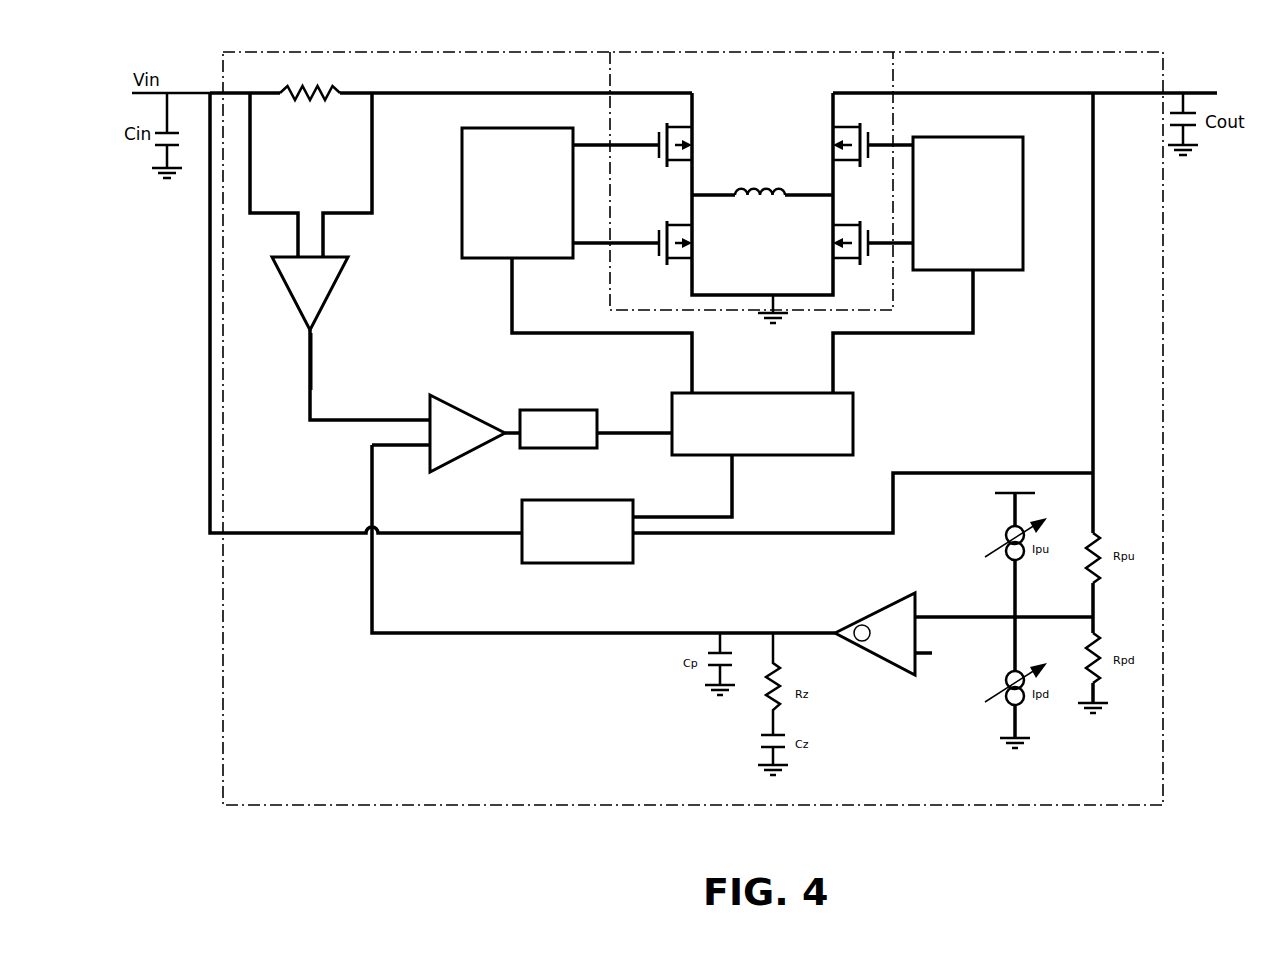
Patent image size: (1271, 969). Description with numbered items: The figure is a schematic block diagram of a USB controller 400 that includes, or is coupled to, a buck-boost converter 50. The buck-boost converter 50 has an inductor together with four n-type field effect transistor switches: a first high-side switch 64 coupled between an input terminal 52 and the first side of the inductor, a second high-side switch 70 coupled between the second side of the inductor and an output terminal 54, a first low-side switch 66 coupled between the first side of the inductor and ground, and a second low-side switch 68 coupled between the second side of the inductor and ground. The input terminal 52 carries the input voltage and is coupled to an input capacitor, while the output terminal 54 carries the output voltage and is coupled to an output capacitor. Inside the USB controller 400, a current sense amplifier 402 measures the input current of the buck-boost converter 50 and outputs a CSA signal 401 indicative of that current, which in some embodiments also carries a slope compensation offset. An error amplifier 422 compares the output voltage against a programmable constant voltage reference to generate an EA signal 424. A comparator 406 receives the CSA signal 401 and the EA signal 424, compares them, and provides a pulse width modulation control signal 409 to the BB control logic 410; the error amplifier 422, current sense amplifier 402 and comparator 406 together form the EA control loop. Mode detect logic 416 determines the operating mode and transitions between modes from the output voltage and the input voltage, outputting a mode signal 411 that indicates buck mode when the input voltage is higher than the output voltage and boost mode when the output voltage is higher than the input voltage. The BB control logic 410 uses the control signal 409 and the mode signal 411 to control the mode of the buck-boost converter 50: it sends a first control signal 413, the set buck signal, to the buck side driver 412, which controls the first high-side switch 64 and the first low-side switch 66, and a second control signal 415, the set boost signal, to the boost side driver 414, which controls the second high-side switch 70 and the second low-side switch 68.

The USB controller 400 is at (215, 58).
The input terminal 52 is at (665, 93).
The output terminal 54 is at (862, 93).
The buck-boost converter 50 is at (794, 139).
The first high-side switch 64 is at (658, 138).
The first low-side switch 66 is at (693, 242).
The second low-side switch 68 is at (845, 243).
The second high-side switch 70 is at (870, 137).
The buck side driver 412 is at (517, 193).
The boost side driver 414 is at (968, 203).
The first control signal 413 is at (513, 333).
The second control signal 415 is at (933, 333).
The current sense amplifier 402 is at (280, 268).
The CSA signal 401 is at (310, 356).
The comparator 406 is at (487, 423).
The control signal 409 is at (612, 432).
The BB control logic 410 is at (762, 424).
The mode signal 411 is at (670, 517).
The mode detect logic 416 is at (540, 500).
The EA signal 424 is at (553, 633).
The error amplifier 422 is at (903, 690).